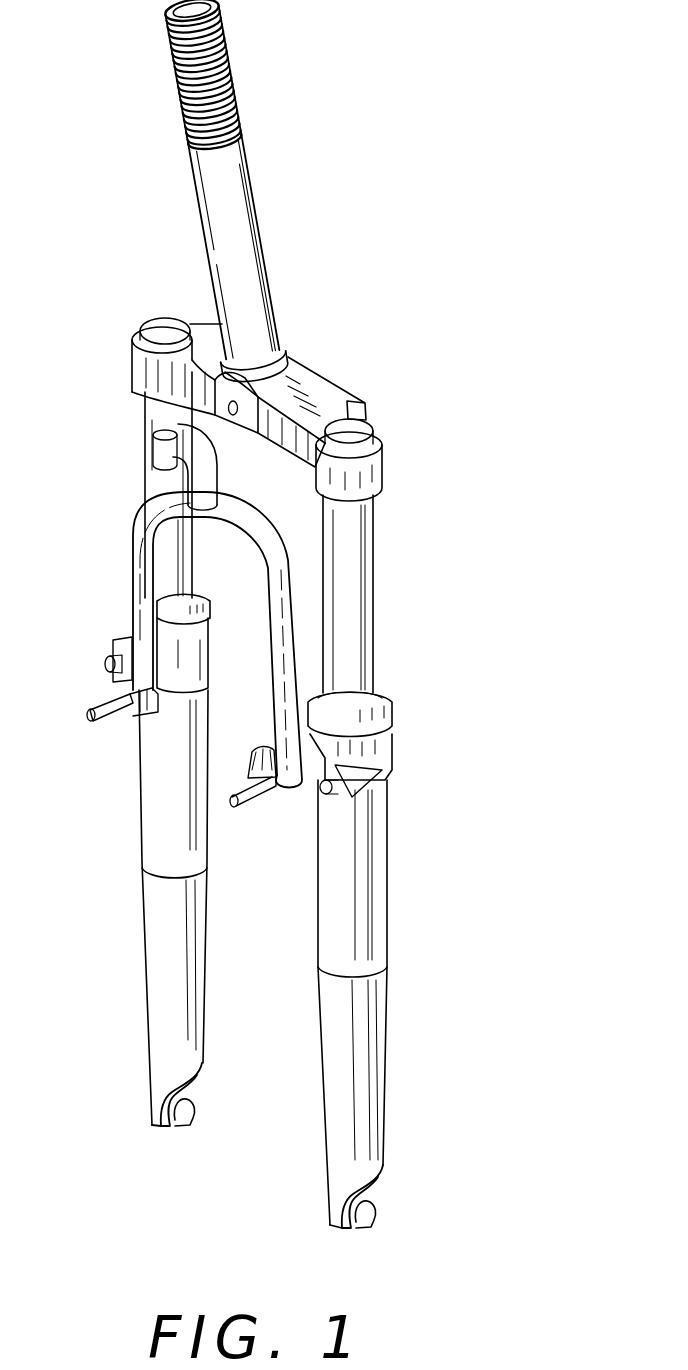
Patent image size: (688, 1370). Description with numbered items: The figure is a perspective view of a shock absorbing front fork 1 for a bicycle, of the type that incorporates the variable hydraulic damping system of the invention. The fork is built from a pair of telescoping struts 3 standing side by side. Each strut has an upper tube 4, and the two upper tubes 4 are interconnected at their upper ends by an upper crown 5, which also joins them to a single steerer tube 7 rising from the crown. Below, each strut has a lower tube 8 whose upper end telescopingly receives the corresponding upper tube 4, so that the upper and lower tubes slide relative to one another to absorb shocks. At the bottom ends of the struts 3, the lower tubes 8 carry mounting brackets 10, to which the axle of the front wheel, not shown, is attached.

The shock absorbing front fork 1 is at (449, 385).
The telescoping struts 3 is at (376, 662).
The upper tubes 4 is at (146, 490).
The upper crown 5 is at (307, 397).
The steerer tube 7 is at (256, 218).
The lower tubes 8 is at (167, 927).
The mounting brackets 10 is at (193, 1108).